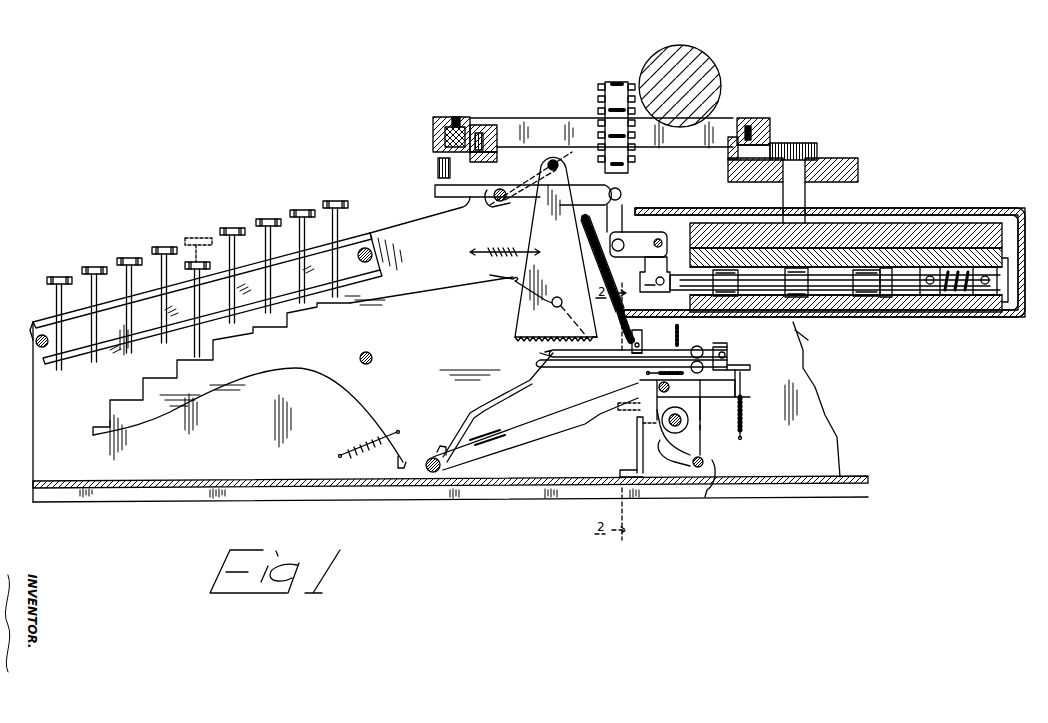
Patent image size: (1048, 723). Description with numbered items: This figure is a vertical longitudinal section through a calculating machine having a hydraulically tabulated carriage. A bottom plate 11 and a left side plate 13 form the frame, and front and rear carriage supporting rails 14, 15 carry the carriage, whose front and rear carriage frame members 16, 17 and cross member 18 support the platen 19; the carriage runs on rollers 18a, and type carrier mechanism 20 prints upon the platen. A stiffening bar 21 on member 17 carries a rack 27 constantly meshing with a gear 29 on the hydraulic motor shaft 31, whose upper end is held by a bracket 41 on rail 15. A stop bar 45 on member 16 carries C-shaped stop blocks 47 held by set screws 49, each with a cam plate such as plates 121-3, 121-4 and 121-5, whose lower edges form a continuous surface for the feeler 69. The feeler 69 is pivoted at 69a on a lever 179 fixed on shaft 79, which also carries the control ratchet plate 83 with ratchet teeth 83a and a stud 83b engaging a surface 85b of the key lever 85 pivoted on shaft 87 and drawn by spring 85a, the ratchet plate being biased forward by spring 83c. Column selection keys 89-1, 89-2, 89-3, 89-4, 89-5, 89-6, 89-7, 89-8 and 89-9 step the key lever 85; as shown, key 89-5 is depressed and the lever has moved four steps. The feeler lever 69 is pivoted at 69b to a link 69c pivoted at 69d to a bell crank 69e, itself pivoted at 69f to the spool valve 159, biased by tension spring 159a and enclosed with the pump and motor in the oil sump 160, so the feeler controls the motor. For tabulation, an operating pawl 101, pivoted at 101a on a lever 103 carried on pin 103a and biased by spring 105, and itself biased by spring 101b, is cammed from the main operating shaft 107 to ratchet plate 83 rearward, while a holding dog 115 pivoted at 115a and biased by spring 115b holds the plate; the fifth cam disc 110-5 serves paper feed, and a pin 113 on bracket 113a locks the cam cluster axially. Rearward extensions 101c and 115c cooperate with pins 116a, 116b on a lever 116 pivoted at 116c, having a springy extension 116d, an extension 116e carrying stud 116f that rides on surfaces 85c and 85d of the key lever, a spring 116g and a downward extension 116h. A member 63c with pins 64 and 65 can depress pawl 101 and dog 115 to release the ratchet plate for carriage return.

The bottom plate 11 is at (255, 481).
The left side plate 13 is at (33, 393).
The front carriage supporting rail 14 is at (497, 155).
The rear carriage supporting rail 15 is at (728, 152).
The front carriage frame member 16 is at (478, 125).
The rear carriage frame member 17 is at (748, 125).
The carriage cross member 18 is at (601, 133).
The rollers 18a is at (485, 140).
The platen 19 is at (714, 72).
The type carrier mechanism 20 is at (616, 127).
The stiffening bar 21 is at (771, 132).
The rack 27 is at (750, 212).
The gear 29 is at (817, 149).
The motor shaft 31 is at (806, 198).
The bracket 41 is at (858, 178).
The stop bar 45 is at (458, 117).
The stop block 47 is at (433, 124).
The set screw 49 is at (450, 117).
The member 63c is at (642, 338).
The pin 64 is at (624, 335).
The pin 65 is at (642, 352).
The feeler 69 is at (435, 188).
The pivot 69a is at (505, 205).
The pivot 69b is at (624, 186).
The link 69c is at (624, 208).
The pivot 69d is at (618, 252).
The bell crank 69e is at (663, 243).
The pivot 69f is at (645, 290).
The shaft 79 is at (560, 165).
The control ratchet plate 83 is at (556, 249).
The ratchet teeth 83a is at (540, 334).
The stud 83b is at (556, 297).
The spring 83c is at (500, 245).
The key lever 85 is at (445, 329).
The spring 85a is at (366, 444).
The surface 85b is at (511, 283).
The surface 85c is at (396, 462).
The surface 85d is at (446, 448).
The shaft 87 is at (381, 349).
The column selection key 89-1 is at (68, 277).
The column selection key 89-2 is at (103, 267).
The column selection key 89-3 is at (128, 258).
The column selection key 89-4 is at (164, 247).
The column selection key 89-5 is at (205, 228).
The column selection key 89-6 is at (235, 228).
The column selection key 89-7 is at (268, 219).
The column selection key 89-8 is at (302, 210).
The column selection key 89-9 is at (342, 190).
The operating pawl 101 is at (580, 368).
The pivot 101a is at (702, 402).
The spring 101b is at (746, 378).
The rearward extension 101c is at (752, 366).
The lever 103 is at (714, 466).
The pin 103a is at (688, 497).
The spring 105 is at (647, 373).
The main operating shaft 107 is at (667, 432).
The fifth cam disc 110-5 is at (676, 460).
The pin 113 is at (636, 433).
The bracket 113a is at (620, 473).
The holding dog 115 is at (612, 352).
The pivot 115a is at (691, 357).
The spring 115b is at (678, 335).
The rearward extension 115c is at (713, 345).
The lever 116 is at (687, 405).
The pin 116a is at (730, 357).
The pin 116b is at (726, 349).
The pivot 116c is at (640, 384).
The springy extension 116d is at (538, 434).
The extension 116e is at (486, 458).
The stud 116f is at (440, 470).
The spring 116g is at (742, 417).
The downward extension 116h is at (630, 413).
The cam plate 121-3 is at (438, 160).
The cam plate 121-4 is at (438, 167).
The cam plate 121-5 is at (438, 174).
The spool valve 159 is at (838, 292).
The tension spring 159a is at (962, 300).
The sump 160 is at (1022, 210).
The lever 179 is at (549, 164).